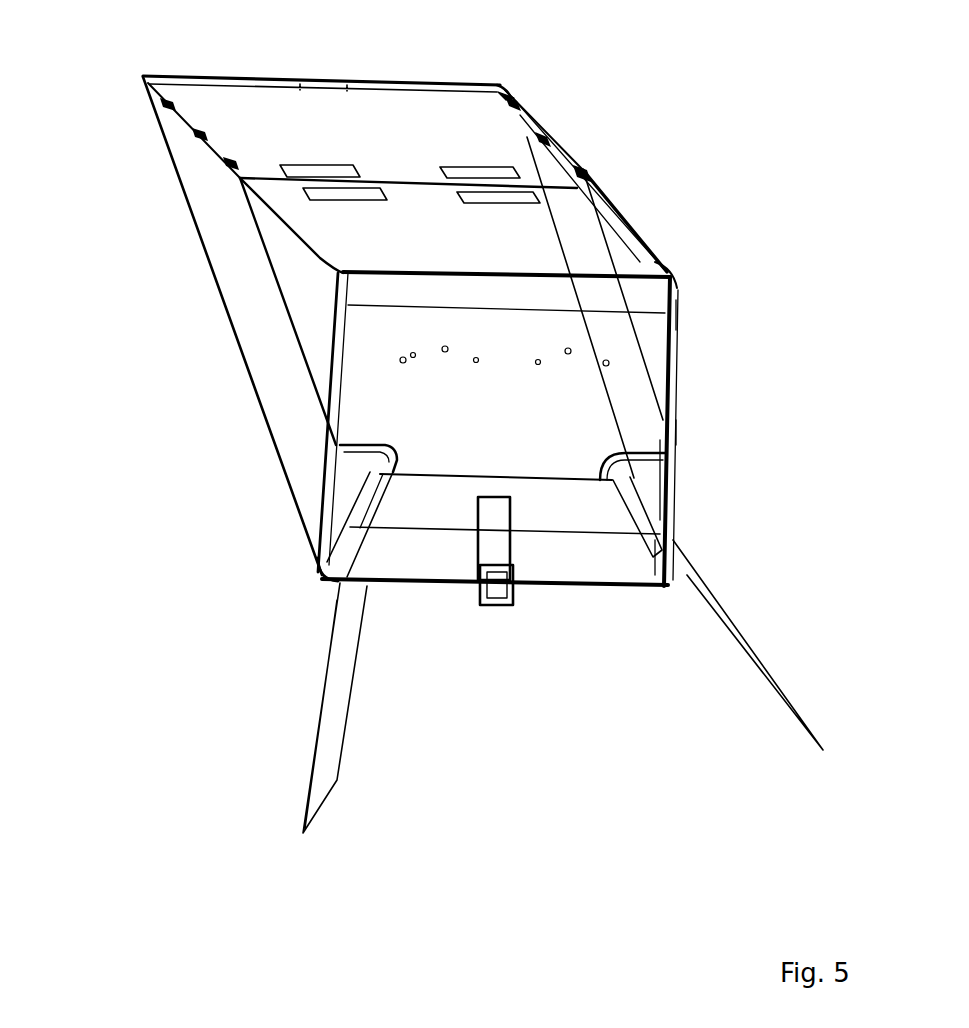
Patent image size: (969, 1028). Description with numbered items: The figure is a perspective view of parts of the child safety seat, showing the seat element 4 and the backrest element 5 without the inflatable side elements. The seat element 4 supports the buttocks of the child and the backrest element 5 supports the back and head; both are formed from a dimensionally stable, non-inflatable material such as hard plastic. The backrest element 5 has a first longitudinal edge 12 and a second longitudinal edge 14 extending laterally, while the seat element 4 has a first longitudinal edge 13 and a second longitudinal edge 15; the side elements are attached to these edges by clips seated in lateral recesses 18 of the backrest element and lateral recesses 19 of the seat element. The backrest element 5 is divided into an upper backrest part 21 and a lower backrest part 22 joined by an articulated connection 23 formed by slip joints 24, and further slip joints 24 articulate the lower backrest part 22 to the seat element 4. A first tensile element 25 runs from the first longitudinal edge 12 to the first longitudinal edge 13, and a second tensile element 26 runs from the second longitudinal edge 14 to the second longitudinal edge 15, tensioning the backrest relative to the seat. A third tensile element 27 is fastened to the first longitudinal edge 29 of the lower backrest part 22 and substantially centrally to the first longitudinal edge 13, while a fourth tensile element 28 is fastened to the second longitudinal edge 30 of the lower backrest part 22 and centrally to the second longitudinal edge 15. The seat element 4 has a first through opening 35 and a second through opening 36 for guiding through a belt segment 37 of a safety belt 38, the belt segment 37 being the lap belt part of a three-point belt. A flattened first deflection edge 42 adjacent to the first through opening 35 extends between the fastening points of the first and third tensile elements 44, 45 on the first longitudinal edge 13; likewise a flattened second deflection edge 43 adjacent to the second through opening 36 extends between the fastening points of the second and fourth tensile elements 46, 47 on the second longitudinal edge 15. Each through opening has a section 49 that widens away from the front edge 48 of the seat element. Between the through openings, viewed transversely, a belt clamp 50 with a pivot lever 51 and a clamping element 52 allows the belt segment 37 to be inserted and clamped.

The seat element 4 is at (600, 575).
The backrest element 5 is at (465, 83).
The first longitudinal edge of backrest element 12 is at (530, 112).
The first longitudinal edge of seat element 13 is at (673, 463).
The second longitudinal edge of backrest element 14 is at (147, 107).
The second longitudinal edge of seat element 15 is at (320, 510).
The lateral recesses of backrest element 18 is at (222, 163).
The lateral recesses of seat element 19 is at (677, 427).
The upper backrest part 21 is at (507, 88).
The lower backrest part 22 is at (630, 245).
The articulated connection 23 is at (307, 193).
The slip joints 24 is at (407, 183).
The first tensile element 25 is at (673, 483).
The second tensile element 26 is at (297, 183).
The third tensile element 27 is at (673, 400).
The fourth tensile element 28 is at (290, 318).
The first longitudinal edge of lower backrest part 29 is at (650, 260).
The second longitudinal edge of lower backrest part 30 is at (300, 226).
The first through opening 35 is at (673, 540).
The second through opening 36 is at (317, 573).
The belt segment 37 is at (567, 497).
The safety belt 38 is at (777, 678).
The first deflection edge 42 is at (675, 513).
The second deflection edge 43 is at (307, 650).
The fastening point of first tensile element 44 is at (517, 97).
The fastening point of third tensile element 45 is at (597, 190).
The fastening point of second tensile element 46 is at (320, 563).
The fastening point of fourth tensile element 47 is at (330, 415).
The front edge 48 is at (383, 583).
The widening section 49 is at (630, 447).
The belt clamp 50 is at (497, 607).
The pivot lever 51 is at (490, 607).
The clamping element 52 is at (507, 607).